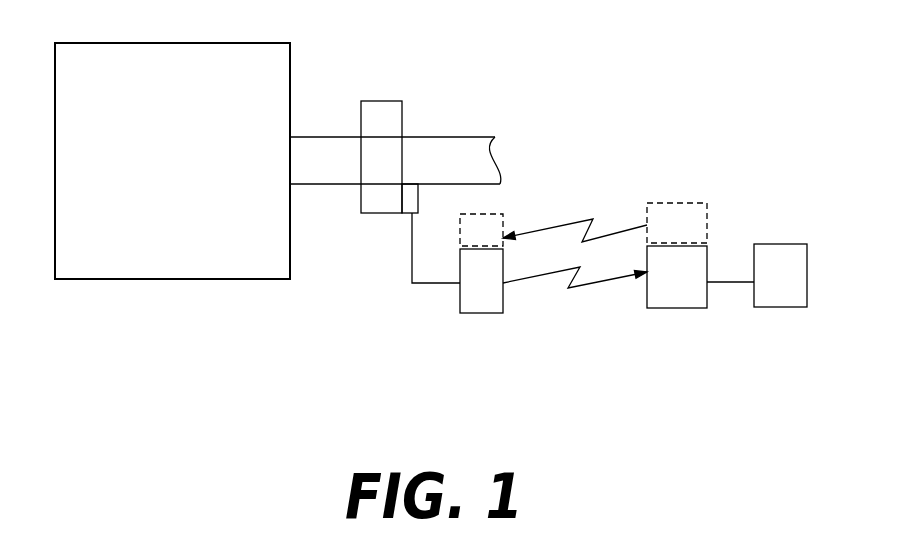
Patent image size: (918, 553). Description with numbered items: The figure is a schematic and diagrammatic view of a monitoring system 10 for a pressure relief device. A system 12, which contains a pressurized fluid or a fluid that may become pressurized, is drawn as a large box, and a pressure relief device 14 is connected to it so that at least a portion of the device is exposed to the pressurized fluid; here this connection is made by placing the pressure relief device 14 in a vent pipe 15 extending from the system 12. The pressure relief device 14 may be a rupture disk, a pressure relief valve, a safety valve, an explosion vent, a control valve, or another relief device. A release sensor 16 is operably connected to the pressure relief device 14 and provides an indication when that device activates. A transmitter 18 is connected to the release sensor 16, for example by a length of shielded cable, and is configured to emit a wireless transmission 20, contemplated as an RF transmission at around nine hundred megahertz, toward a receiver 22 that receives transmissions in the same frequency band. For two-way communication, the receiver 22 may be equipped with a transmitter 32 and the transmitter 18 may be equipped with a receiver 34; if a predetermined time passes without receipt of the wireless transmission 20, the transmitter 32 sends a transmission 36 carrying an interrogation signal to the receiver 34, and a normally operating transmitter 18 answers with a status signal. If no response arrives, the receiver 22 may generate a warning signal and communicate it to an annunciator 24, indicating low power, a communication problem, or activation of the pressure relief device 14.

The monitoring system 10 is at (735, 193).
The system 12 is at (164, 174).
The pressure relief device 14 is at (385, 117).
The vent pipe 15 is at (453, 147).
The release sensor 16 is at (418, 190).
The transmitter 18 is at (480, 313).
The wireless transmission 20 is at (588, 287).
The receiver 22 is at (677, 297).
The annunciator 24 is at (785, 295).
The transmitter 32 is at (661, 238).
The receiver 34 is at (466, 245).
The transmission 36 is at (592, 219).